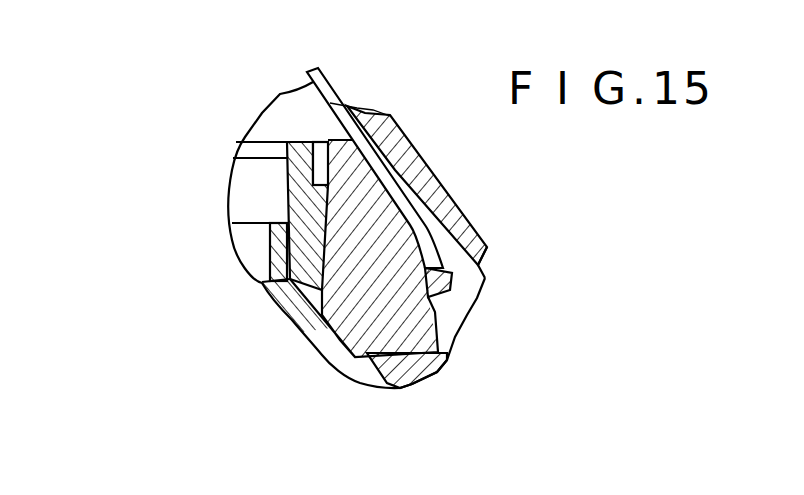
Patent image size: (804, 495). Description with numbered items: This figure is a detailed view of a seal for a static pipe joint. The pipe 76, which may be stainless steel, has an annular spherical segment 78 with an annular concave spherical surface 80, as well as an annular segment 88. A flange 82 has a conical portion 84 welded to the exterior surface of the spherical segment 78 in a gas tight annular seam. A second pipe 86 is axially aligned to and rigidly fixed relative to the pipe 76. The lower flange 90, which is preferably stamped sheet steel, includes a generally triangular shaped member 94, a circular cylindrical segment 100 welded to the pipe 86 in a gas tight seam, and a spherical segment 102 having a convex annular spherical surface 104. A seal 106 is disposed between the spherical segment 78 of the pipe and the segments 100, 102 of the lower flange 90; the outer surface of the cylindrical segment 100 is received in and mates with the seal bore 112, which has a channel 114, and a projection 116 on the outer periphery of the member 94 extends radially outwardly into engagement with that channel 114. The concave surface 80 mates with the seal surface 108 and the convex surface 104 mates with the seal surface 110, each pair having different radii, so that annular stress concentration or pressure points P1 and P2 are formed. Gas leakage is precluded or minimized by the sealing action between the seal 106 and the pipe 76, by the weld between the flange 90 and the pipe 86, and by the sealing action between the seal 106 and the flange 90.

The pipe 76 is at (360, 78).
The annular spherical segment 78 is at (356, 107).
The annular concave spherical surface 80 is at (280, 94).
The flange 82 is at (470, 190).
The conical portion 84 is at (486, 245).
The pipe 86 is at (262, 283).
The annular segment 88 is at (270, 257).
The lower flange 90 is at (262, 175).
The generally triangular shaped member 94 is at (411, 389).
The circular cylindrical segment 100 is at (313, 184).
The spherical segment 102 is at (355, 297).
The convex annular spherical surface 104 is at (400, 326).
The seal 106 is at (420, 162).
The mating surface 108 is at (455, 272).
The mating surface 110 is at (262, 282).
The seal bore 112 is at (290, 218).
The channel 114 is at (237, 147).
The projection 116 is at (364, 248).
The annular stress concentration or pressure point P1 is at (365, 290).
The annular stress concentration or pressure point P2 is at (365, 150).